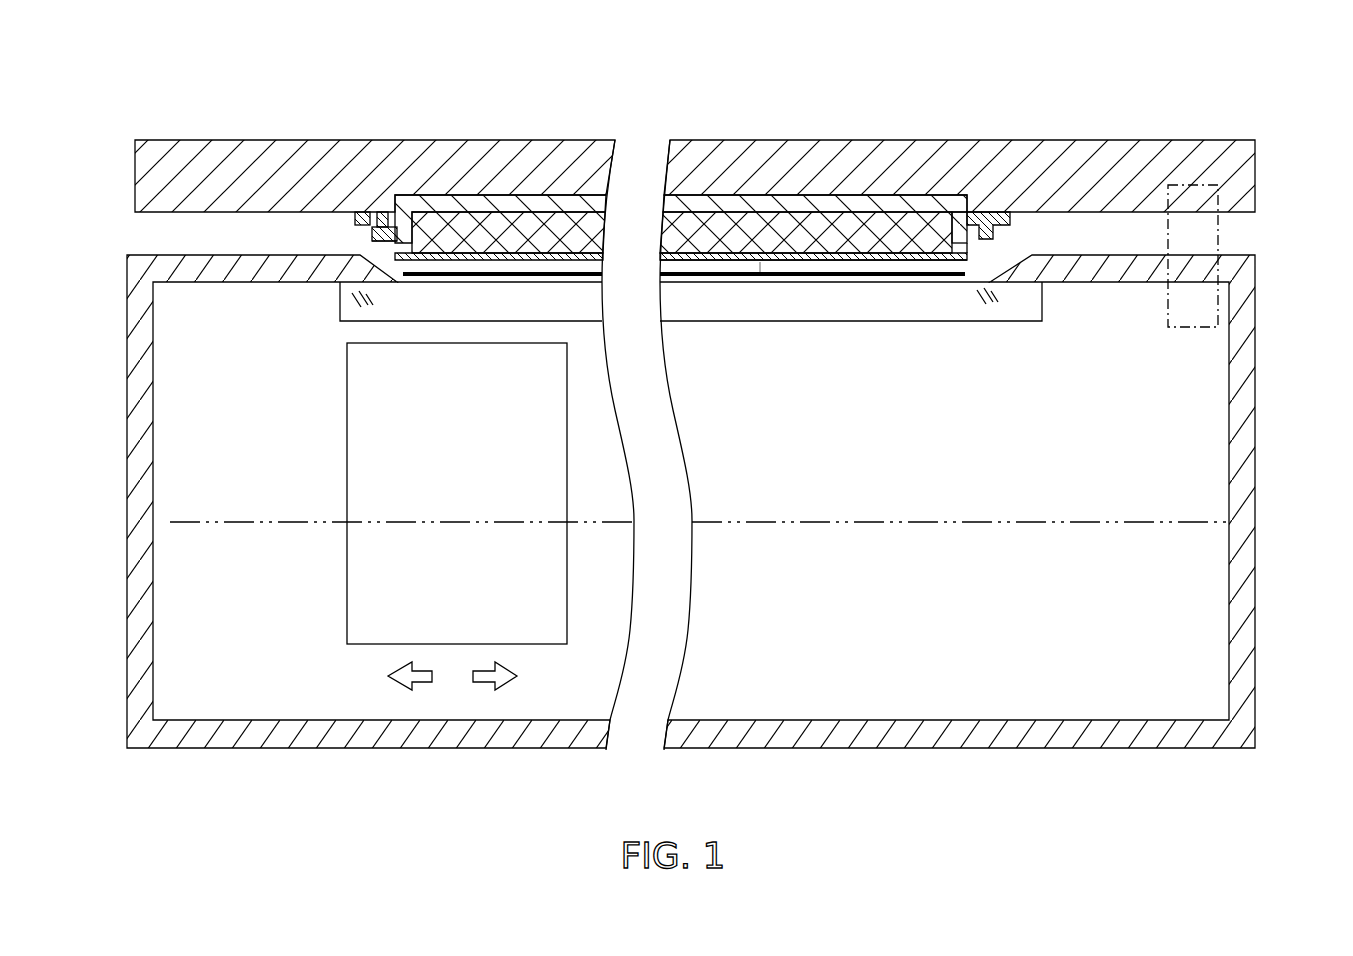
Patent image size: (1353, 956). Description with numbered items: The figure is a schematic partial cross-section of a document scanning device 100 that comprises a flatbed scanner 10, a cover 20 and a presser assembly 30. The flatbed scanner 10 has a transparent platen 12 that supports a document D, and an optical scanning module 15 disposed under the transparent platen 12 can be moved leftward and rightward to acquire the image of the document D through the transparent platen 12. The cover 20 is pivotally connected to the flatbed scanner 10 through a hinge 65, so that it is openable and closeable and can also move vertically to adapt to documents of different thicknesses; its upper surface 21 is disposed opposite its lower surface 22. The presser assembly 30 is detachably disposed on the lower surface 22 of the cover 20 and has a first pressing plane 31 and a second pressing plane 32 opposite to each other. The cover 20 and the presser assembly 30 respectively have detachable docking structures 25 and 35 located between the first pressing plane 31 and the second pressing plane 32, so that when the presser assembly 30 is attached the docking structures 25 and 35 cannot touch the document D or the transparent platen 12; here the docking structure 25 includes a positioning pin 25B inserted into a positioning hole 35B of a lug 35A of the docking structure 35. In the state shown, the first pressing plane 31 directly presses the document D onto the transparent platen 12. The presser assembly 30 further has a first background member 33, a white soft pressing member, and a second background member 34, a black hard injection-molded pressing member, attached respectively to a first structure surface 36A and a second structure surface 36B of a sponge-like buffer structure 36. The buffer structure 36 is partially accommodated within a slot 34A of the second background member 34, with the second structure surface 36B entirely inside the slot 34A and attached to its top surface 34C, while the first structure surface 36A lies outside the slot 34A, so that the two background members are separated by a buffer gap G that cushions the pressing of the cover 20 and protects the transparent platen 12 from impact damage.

The document scanning device 100 is at (656, 30).
The flatbed scanner 10 is at (118, 400).
The transparent platen 12 is at (903, 298).
The optical scanning module 15 is at (362, 487).
The cover 20 is at (226, 131).
The upper surface 21 is at (1053, 138).
The lower surface 22 is at (815, 146).
The docking structure 25 is at (302, 299).
The positioning pin 25B is at (360, 247).
The presser assembly 30 is at (681, 265).
The first pressing plane 31 is at (820, 260).
The second pressing plane 32 is at (753, 197).
The first background member 33 is at (717, 260).
The second background member 34 is at (527, 203).
The slot 34A is at (945, 236).
The top surface 34C is at (690, 258).
The docking structure 35 is at (322, 162).
The lug 35A is at (357, 212).
The positioning hole 35B is at (384, 212).
The buffer structure 36 is at (508, 160).
The first structure surface 36A is at (462, 240).
The second structure surface 36B is at (681, 170).
The hinge 65 is at (1229, 236).
The document D is at (770, 275).
The buffer gap G is at (968, 250).